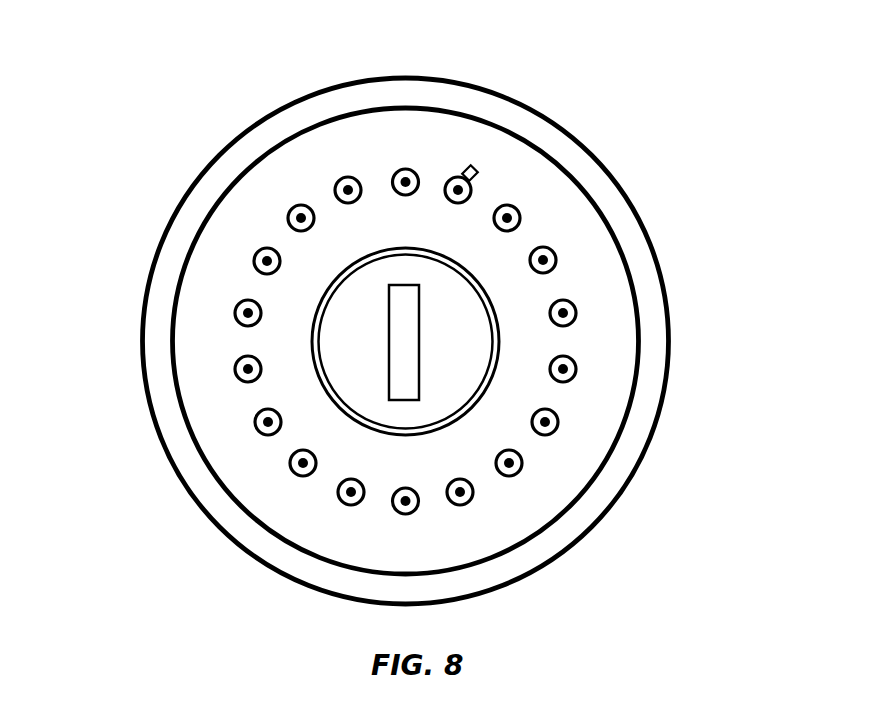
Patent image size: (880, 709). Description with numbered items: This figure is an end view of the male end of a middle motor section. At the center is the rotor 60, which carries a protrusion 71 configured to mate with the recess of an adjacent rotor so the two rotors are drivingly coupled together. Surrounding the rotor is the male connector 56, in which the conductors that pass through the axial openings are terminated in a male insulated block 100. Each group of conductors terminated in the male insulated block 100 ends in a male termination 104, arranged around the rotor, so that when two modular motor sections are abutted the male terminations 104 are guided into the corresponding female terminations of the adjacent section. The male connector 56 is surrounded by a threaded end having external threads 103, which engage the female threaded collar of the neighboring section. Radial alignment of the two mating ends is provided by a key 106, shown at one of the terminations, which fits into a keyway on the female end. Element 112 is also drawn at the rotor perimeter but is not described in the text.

The male connector 56 is at (539, 197).
The rotor 60 is at (406, 326).
The protrusion 71 is at (432, 342).
The male insulated block 100 is at (289, 212).
The external threads 103 is at (624, 238).
The male termination 104 is at (256, 420).
The key 106 is at (522, 135).
The dial perimeter 112 is at (405, 363).